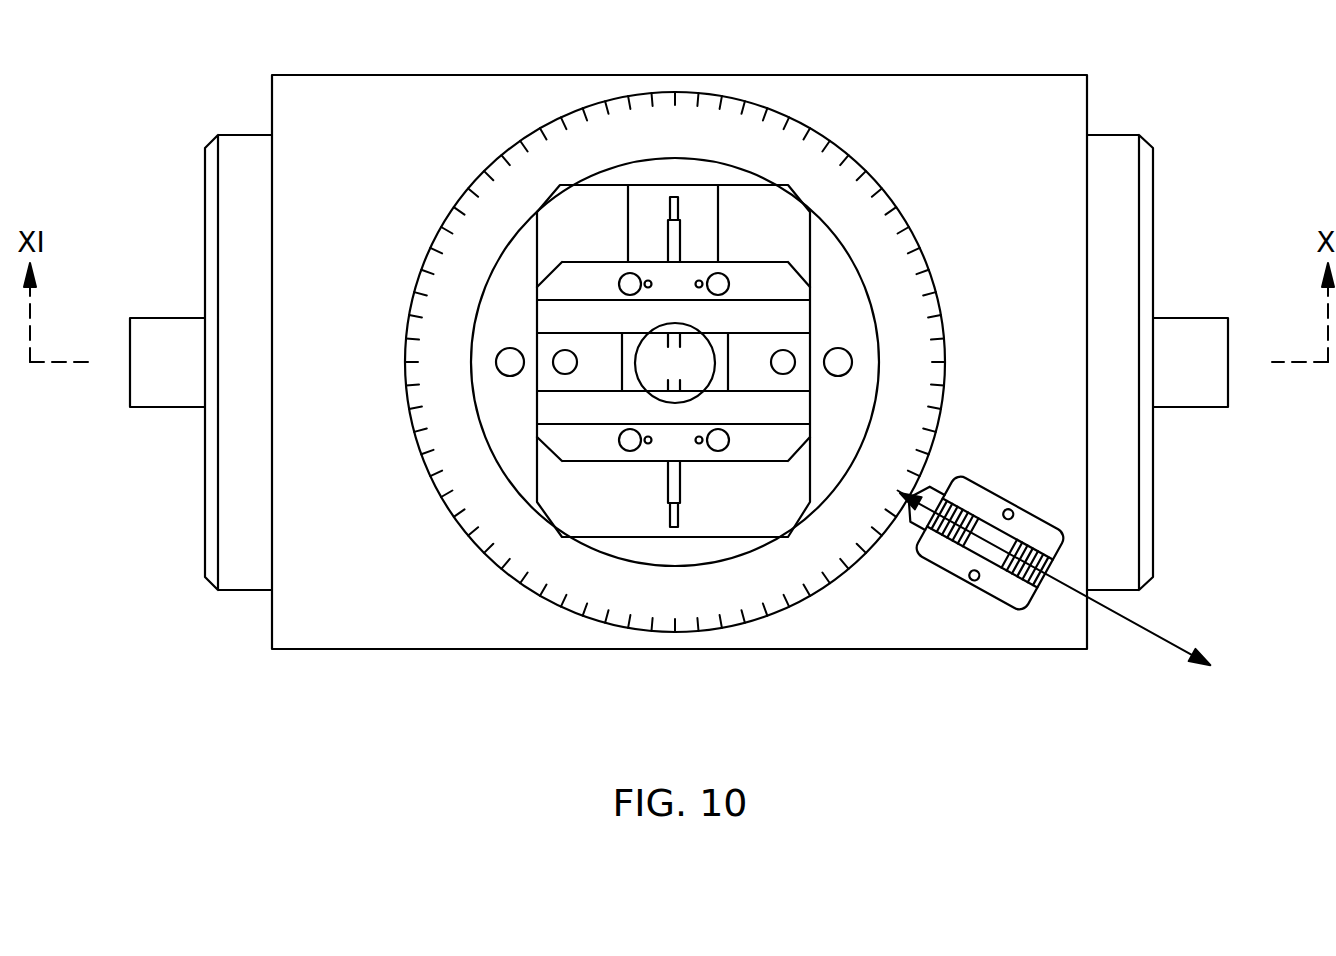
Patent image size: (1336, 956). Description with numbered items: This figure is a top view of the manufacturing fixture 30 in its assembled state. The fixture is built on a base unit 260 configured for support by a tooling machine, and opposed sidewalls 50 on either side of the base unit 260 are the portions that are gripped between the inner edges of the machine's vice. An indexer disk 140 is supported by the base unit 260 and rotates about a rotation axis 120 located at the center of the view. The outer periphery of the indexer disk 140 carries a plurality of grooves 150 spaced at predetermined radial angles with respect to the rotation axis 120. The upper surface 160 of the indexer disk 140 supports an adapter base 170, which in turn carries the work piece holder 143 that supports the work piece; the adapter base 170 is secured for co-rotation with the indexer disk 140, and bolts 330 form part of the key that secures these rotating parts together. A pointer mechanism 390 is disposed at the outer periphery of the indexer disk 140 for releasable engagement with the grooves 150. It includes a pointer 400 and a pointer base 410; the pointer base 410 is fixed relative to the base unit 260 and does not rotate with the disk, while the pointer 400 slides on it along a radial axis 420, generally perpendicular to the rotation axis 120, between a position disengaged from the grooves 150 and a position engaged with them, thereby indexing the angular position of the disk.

The manufacturing fixture 30 is at (375, 692).
The opposed sidewalls 50 is at (226, 190).
The rotation axis 120 is at (710, 358).
The indexer disk 140 is at (694, 133).
The work piece holder 143 is at (587, 213).
The grooves 150 is at (790, 607).
The upper surface 160 is at (498, 432).
The adapter base 170 is at (509, 256).
The base unit 260 is at (1077, 114).
The bolts 330 is at (496, 362).
The pointer mechanism 390 is at (1064, 617).
The pointer 400 is at (975, 500).
The pointer base 410 is at (978, 592).
The radial axis 420 is at (1163, 640).